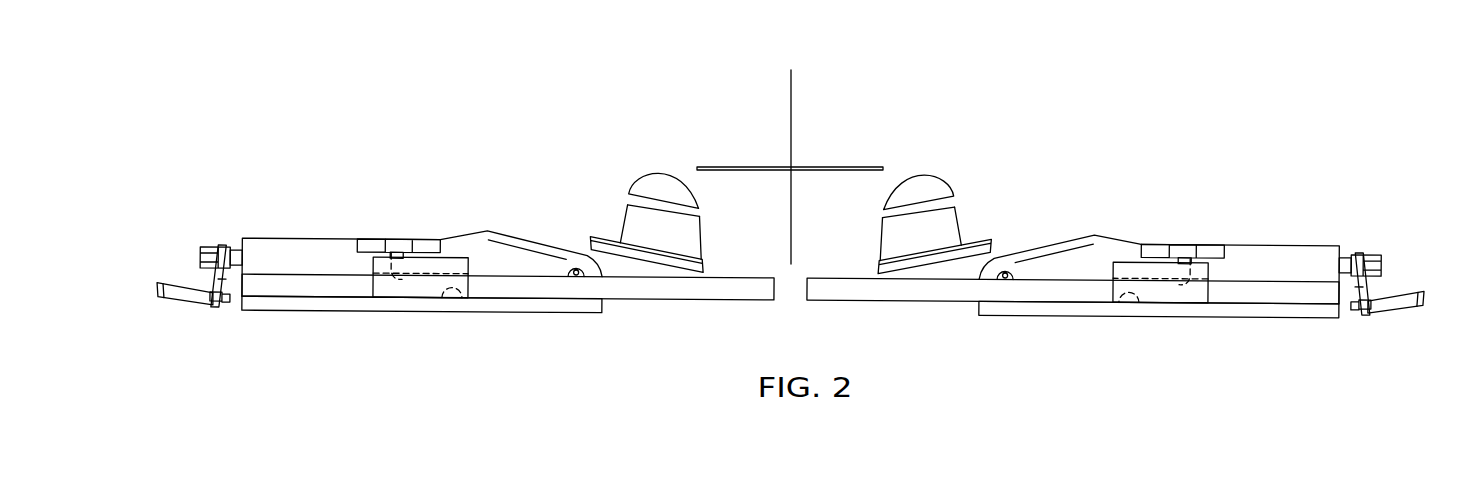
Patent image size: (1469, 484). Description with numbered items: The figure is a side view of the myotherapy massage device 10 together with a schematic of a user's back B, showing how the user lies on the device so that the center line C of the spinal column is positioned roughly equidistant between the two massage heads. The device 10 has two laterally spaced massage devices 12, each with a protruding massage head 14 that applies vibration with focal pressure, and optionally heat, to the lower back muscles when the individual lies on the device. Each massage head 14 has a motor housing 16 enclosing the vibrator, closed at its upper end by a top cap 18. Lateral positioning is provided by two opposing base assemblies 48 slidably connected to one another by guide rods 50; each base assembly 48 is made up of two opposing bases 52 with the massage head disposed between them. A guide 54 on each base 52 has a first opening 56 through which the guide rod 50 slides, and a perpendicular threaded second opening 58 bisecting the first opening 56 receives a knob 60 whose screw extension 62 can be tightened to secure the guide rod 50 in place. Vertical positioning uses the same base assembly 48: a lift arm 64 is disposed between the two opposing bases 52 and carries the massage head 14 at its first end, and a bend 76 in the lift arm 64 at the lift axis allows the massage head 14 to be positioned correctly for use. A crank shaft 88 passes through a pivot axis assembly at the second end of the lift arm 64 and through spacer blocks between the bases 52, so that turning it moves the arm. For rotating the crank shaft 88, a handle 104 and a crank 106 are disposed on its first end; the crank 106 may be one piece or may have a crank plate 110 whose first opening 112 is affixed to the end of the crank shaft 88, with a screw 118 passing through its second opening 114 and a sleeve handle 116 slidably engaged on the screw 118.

The myotherapy massage device 10 is at (800, 226).
The massage device 12 is at (800, 269).
The massage head 14 is at (789, 234).
The motor housing 16 is at (727, 241).
The top cap 18 is at (622, 135).
The base assembly 48 is at (332, 357).
The guide rod 50 is at (830, 290).
The base 52 is at (310, 257).
The guide 54 is at (417, 293).
The first opening 56 is at (467, 307).
The second opening 58 is at (375, 275).
The knob 60 is at (370, 248).
The screw extension 62 is at (405, 252).
The lift arm 64 is at (627, 268).
The bend 76 is at (487, 230).
The crank shaft 88 is at (232, 258).
The handle 104 is at (800, 294).
The crank 106 is at (182, 253).
The crank plate 110 is at (217, 278).
The first opening 112 is at (207, 250).
The second opening 114 is at (245, 307).
The sleeve handle 116 is at (188, 300).
The screw 118 is at (160, 300).
The back B is at (726, 127).
The center line C is at (798, 171).